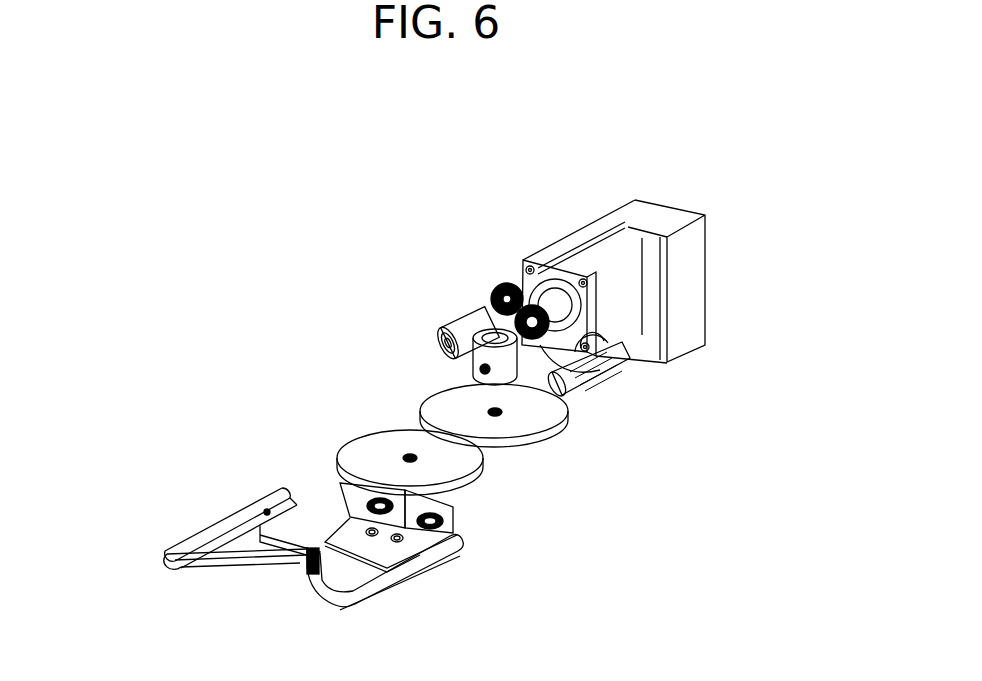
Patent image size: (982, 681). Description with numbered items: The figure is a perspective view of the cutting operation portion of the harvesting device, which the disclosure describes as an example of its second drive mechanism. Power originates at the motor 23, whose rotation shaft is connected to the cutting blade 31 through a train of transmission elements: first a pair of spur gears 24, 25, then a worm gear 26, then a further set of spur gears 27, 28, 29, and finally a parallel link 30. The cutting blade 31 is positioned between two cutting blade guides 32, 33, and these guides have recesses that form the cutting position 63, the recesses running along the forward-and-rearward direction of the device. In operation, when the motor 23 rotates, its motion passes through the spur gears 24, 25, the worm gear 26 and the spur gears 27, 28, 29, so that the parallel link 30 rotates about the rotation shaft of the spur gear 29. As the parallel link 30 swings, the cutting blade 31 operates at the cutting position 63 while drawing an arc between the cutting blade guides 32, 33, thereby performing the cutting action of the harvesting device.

The motor 23 is at (688, 257).
The spur gear 24 is at (540, 303).
The spur gear 25 is at (505, 303).
The worm gear 26 is at (473, 333).
The spur gear 27 is at (483, 382).
The spur gear 28 is at (458, 410).
The spur gear 29 is at (377, 455).
The parallel link 30 is at (430, 505).
The cutting blade 31 is at (362, 550).
The cutting blade guide 32 is at (170, 556).
The cutting blade guide 33 is at (183, 562).
The cutting position 63 is at (302, 555).